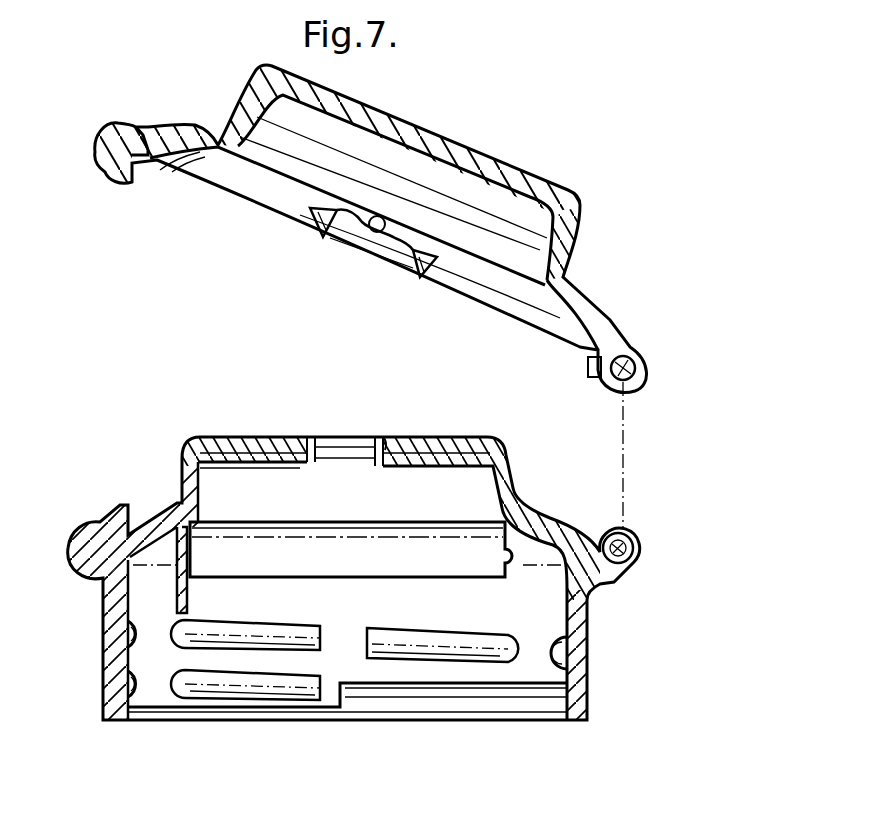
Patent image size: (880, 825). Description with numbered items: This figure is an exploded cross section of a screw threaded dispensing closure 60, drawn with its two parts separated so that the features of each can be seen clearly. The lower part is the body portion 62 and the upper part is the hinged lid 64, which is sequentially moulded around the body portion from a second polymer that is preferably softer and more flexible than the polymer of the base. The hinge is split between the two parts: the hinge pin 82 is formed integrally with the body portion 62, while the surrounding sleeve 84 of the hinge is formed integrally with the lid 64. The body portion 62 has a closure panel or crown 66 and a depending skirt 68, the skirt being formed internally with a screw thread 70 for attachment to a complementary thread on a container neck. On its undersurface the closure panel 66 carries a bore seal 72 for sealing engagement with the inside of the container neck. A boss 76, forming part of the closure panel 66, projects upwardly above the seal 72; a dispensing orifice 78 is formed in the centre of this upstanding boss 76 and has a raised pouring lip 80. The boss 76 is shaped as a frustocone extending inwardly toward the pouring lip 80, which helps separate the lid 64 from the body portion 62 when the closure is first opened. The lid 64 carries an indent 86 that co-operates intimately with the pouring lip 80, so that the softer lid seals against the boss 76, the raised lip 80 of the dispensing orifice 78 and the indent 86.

The screw threaded dispensing closure 60 is at (693, 405).
The body portion 62 is at (588, 672).
The hinged lid 64 is at (357, 125).
The closure panel 66 is at (198, 468).
The depending skirt 68 is at (112, 598).
The screw thread 70 is at (135, 633).
The bore seal 72 is at (182, 568).
The boss 76 is at (188, 458).
The dispensing orifice 78 is at (353, 457).
The raised pouring lip 80 is at (385, 448).
The hinge pin 82 is at (634, 548).
The surrounding sleeve 84 is at (647, 343).
The indent 86 is at (455, 165).